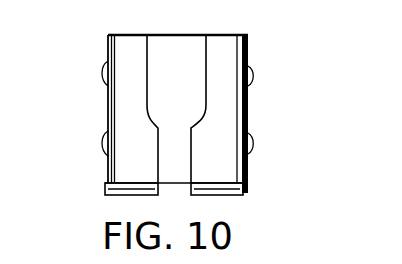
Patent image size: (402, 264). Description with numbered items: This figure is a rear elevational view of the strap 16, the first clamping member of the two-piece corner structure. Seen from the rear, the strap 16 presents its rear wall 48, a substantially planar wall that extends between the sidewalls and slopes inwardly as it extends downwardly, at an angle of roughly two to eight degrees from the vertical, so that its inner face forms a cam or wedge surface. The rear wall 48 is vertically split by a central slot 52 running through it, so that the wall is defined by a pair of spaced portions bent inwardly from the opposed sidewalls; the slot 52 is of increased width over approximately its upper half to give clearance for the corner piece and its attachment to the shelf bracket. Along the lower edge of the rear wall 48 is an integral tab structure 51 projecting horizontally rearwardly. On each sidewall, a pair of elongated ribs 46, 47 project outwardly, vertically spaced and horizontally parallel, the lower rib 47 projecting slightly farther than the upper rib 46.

The strap 16 is at (108, 106).
The central slot 52 is at (149, 59).
The upper rib 46 is at (253, 74).
The lower rib 47 is at (253, 143).
The rear wall 48 is at (227, 163).
The tab structure 51 is at (117, 188).